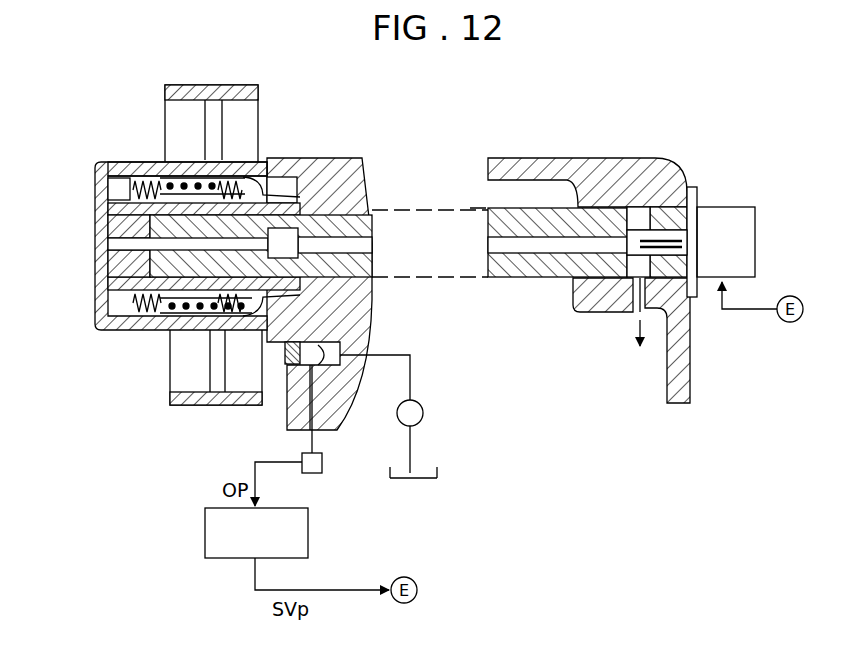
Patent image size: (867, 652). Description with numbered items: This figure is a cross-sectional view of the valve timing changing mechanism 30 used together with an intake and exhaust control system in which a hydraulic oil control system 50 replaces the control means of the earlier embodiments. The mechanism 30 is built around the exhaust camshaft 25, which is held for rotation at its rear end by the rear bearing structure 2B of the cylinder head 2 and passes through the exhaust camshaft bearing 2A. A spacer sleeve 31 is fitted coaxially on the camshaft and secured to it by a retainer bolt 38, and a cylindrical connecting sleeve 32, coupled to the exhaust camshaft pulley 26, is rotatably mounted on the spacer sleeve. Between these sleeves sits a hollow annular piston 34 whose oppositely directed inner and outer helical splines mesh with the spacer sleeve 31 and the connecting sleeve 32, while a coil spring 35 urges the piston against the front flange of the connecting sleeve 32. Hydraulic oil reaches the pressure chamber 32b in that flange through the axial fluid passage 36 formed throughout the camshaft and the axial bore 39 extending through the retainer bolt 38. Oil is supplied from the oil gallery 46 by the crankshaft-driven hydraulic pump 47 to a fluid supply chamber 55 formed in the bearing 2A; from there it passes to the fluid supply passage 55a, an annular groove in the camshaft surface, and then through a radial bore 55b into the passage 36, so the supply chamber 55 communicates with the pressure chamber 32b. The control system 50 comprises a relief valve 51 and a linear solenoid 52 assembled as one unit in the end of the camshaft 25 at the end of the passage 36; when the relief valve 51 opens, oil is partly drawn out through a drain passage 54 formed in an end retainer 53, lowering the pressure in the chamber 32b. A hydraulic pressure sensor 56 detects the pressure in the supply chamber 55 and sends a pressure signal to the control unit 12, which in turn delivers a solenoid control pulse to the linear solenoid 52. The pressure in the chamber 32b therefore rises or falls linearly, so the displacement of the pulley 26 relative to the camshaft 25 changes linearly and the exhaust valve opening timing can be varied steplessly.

The cylinder head 2 is at (322, 259).
The exhaust camshaft bearing 2A is at (374, 369).
The rear bearing structure 2B is at (505, 158).
The control unit 12 is at (205, 529).
The exhaust camshaft 25 is at (352, 205).
The exhaust camshaft pulley 26 is at (187, 406).
The valve timing changing mechanism 30 is at (165, 258).
The spacer sleeve 31 is at (157, 336).
The connecting sleeve 32 is at (112, 163).
The pressure chamber 32b is at (98, 168).
The hollow annular piston 34 is at (150, 163).
The coil spring 35 is at (229, 172).
The fluid passage 36 is at (372, 243).
The retainer bolt 38 is at (108, 266).
The axial bore 39 is at (179, 332).
The oil gallery 46 is at (420, 480).
The hydraulic pump 47 is at (424, 413).
The hydraulic oil control system 50 is at (702, 95).
The relief valve 51 is at (655, 160).
The linear solenoid 52 is at (717, 207).
The end retainer 53 is at (577, 308).
The drain passage 54 is at (638, 302).
The fluid supply chamber 55 is at (320, 343).
The fluid supply passage 55a is at (308, 158).
The radial bore 55b is at (318, 268).
The hydraulic pressure sensor 56 is at (318, 474).